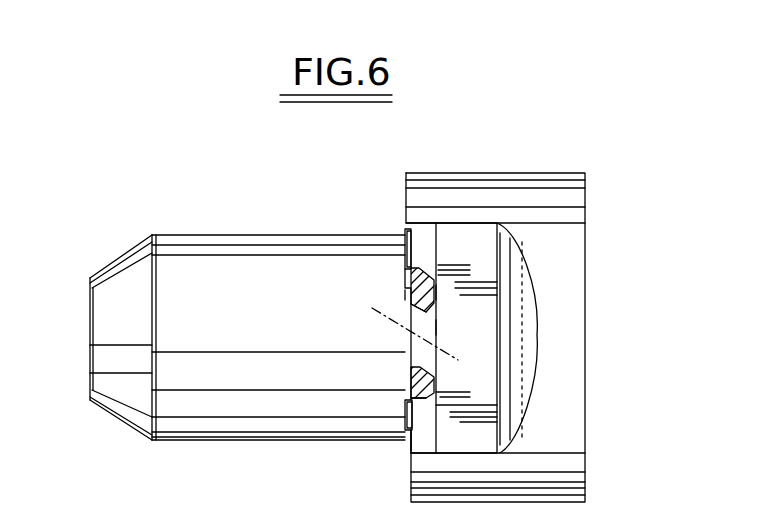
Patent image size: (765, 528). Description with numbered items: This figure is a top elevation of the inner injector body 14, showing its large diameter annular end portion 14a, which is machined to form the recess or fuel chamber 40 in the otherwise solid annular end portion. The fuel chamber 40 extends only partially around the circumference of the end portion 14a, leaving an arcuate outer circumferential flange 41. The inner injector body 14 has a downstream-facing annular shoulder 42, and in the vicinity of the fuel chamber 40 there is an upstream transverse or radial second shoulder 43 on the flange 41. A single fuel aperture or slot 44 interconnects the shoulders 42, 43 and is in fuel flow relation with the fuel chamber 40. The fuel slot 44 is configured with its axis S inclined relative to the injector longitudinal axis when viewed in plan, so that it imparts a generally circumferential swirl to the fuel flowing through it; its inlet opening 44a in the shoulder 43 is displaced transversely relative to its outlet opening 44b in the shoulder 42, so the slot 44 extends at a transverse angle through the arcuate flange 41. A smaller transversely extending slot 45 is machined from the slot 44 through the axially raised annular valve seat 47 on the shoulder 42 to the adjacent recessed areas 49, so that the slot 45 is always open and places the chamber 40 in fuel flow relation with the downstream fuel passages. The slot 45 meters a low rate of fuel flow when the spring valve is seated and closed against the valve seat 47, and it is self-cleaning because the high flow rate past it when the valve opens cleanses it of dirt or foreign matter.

The inner injector body 14 is at (238, 234).
The large diameter end portion 14a is at (518, 182).
The fuel chamber 40 is at (462, 232).
The arcuate outer circumferential flange 41 is at (410, 437).
The downstream-facing annular shoulder 42 is at (412, 277).
The upstream second shoulder 43 is at (438, 293).
The fuel slot 44 is at (411, 343).
The inlet opening 44a is at (437, 327).
The outlet opening 44b is at (406, 299).
The transversely extending slot 45 is at (411, 305).
The annular valve seat 47 is at (408, 372).
The recessed areas 49 is at (405, 243).
The axis of fuel slot S is at (450, 360).